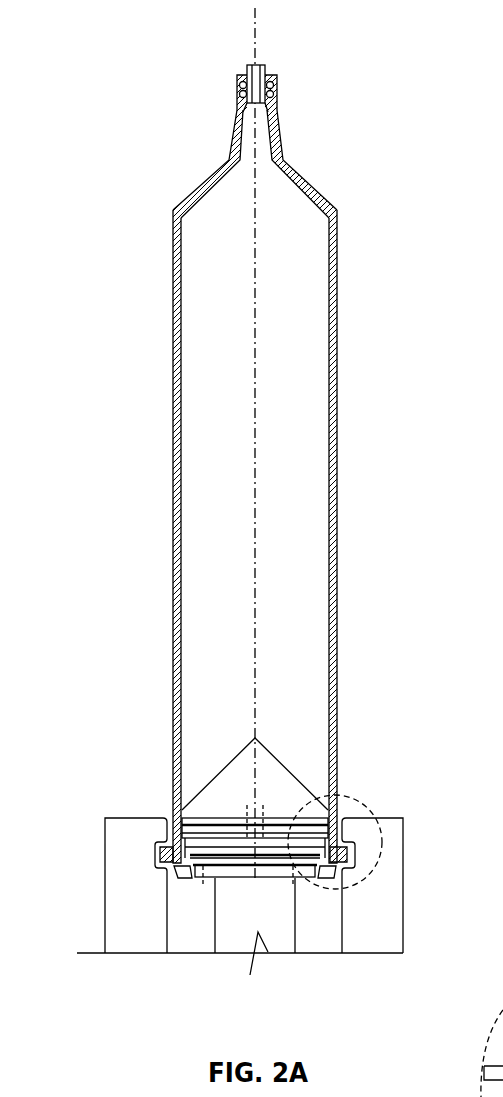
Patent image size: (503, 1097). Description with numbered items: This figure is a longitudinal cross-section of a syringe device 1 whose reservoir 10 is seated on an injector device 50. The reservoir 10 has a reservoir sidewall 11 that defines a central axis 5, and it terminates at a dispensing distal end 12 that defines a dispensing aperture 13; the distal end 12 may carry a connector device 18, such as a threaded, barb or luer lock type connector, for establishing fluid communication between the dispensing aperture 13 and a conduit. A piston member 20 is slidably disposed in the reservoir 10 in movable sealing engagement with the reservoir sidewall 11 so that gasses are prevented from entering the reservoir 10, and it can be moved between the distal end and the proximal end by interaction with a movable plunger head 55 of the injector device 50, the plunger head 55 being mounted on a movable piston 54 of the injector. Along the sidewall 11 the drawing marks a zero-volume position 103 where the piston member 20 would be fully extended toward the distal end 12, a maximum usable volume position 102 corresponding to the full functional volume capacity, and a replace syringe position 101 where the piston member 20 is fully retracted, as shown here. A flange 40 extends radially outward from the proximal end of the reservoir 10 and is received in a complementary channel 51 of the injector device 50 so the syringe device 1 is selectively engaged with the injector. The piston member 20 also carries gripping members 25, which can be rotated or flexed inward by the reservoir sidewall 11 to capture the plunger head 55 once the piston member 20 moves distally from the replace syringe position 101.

The syringe device 1 is at (108, 38).
The axis 5 is at (256, 28).
The reservoir 10 is at (357, 429).
The reservoir sidewall 11 is at (165, 433).
The dispensing distal end 12 is at (290, 94).
The dispensing aperture 13 is at (258, 65).
The connector device 18 is at (238, 90).
The piston member 20 is at (268, 757).
The gripping members 25 is at (333, 876).
The flange 40 is at (158, 861).
The injector device 50 is at (112, 920).
The channel 51 is at (153, 848).
The movable piston 54 is at (242, 925).
The movable plunger head 55 is at (205, 875).
The replace syringe position 101 is at (345, 808).
The maximum usable volume position 102 is at (355, 707).
The zero-volume position 103 is at (350, 216).